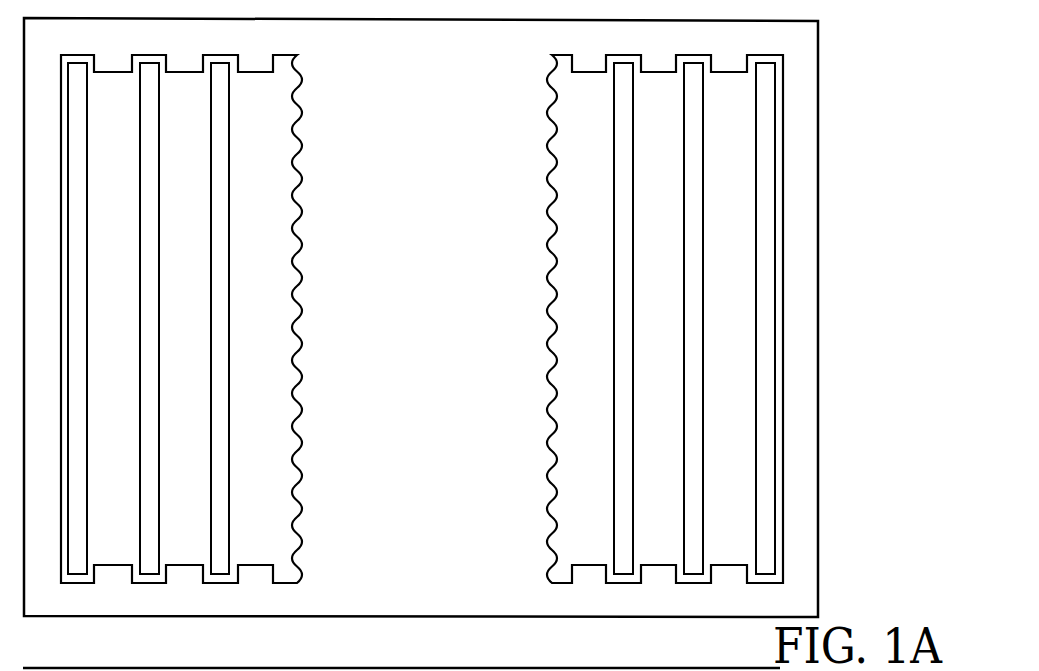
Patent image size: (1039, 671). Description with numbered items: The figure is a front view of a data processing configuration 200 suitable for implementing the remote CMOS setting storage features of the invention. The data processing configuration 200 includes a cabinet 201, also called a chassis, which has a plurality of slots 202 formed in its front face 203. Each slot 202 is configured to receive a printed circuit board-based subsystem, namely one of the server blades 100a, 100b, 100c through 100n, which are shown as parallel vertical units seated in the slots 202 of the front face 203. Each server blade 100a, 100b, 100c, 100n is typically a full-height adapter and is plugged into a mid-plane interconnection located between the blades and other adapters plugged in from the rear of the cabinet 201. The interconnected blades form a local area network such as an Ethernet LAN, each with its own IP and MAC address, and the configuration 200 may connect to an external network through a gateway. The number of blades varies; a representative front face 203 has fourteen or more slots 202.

The server blade 100a is at (77, 158).
The server blade 100b is at (190, 143).
The server blade 100c is at (222, 158).
The server blade 100n is at (765, 177).
The data processing configuration 200 is at (862, 213).
The cabinet 201 is at (818, 387).
The slot 202 is at (94, 63).
The front face 203 is at (805, 612).